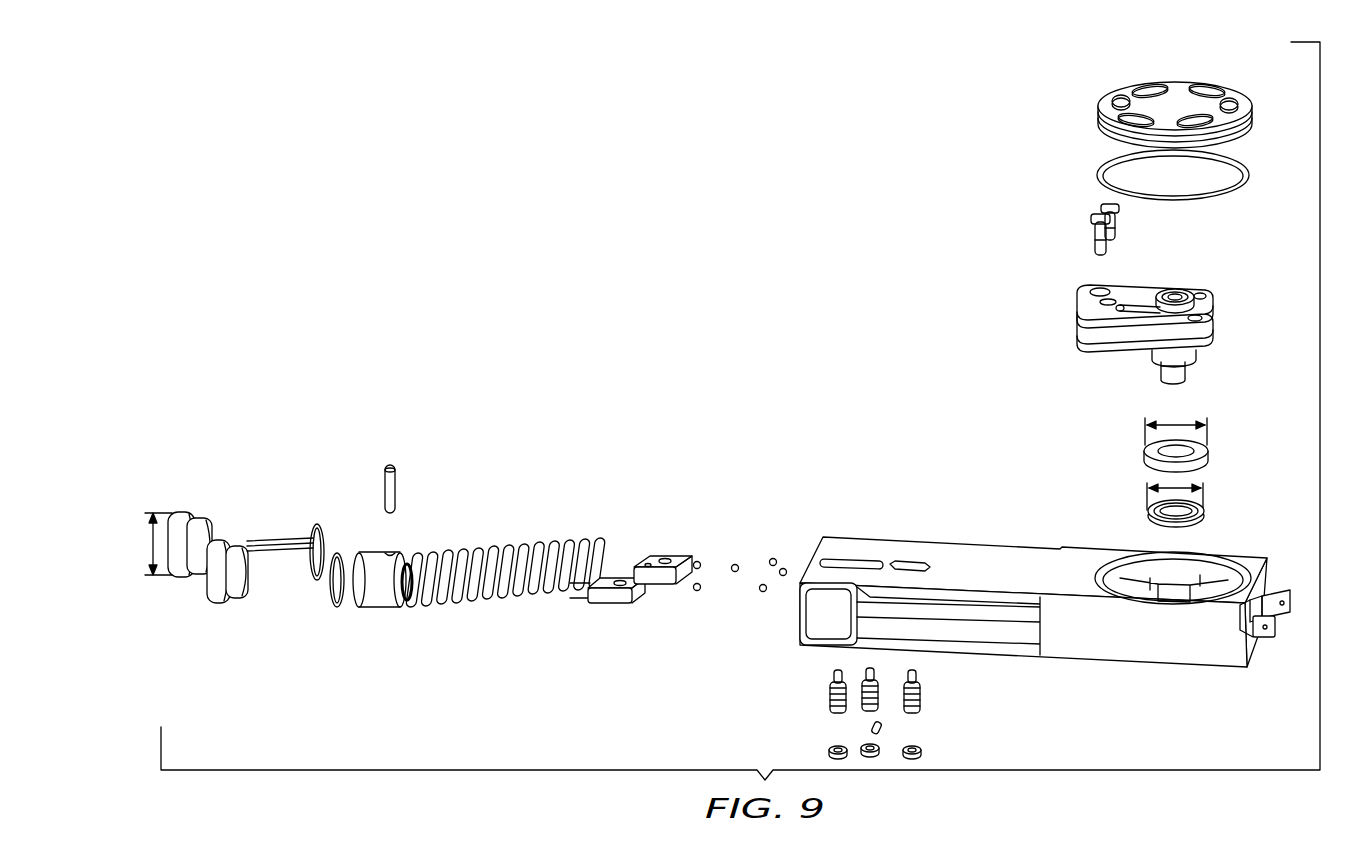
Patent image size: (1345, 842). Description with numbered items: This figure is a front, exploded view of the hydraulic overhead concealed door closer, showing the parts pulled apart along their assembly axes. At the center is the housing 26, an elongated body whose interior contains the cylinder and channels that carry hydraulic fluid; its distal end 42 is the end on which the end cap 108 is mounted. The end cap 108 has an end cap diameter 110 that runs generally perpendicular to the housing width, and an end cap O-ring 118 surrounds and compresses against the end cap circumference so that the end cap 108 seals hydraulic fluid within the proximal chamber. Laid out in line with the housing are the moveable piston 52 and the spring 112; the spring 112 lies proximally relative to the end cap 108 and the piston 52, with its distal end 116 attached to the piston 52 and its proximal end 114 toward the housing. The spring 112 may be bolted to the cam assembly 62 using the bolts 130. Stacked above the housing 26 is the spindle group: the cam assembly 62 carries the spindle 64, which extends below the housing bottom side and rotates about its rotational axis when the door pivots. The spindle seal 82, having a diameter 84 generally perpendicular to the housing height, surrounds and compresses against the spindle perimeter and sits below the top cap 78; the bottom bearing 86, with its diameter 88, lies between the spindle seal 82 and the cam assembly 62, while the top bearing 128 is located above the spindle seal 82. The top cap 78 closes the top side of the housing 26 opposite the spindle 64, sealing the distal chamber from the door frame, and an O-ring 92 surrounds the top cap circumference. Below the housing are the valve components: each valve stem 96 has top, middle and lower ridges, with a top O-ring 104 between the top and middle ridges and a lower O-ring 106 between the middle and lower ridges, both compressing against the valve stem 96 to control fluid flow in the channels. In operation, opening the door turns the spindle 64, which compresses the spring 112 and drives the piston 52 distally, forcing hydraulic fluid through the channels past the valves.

The housing 26 is at (1052, 624).
The distal end 42 is at (1280, 608).
The moveable piston 52 is at (373, 560).
The cam assembly 62 is at (1178, 313).
The spindle 64 is at (1196, 372).
The top cap 78 is at (1184, 88).
The spindle seal 82 is at (1205, 515).
The diameter 84 is at (1160, 486).
The bottom bearing 86 is at (1208, 456).
The diameter 88 is at (1172, 422).
The O-ring 92 is at (1212, 198).
The valve stem 96 is at (902, 692).
The top O-ring 104 is at (840, 743).
The lower O-ring 106 is at (830, 752).
The end cap 108 is at (182, 518).
The end cap diameter 110 is at (150, 512).
The spring 112 is at (478, 600).
The proximal end 114 is at (618, 605).
The distal end 116 is at (408, 600).
The end cap O-ring 118 is at (318, 522).
The top bearing 128 is at (1213, 303).
The bolts 130 is at (1092, 236).